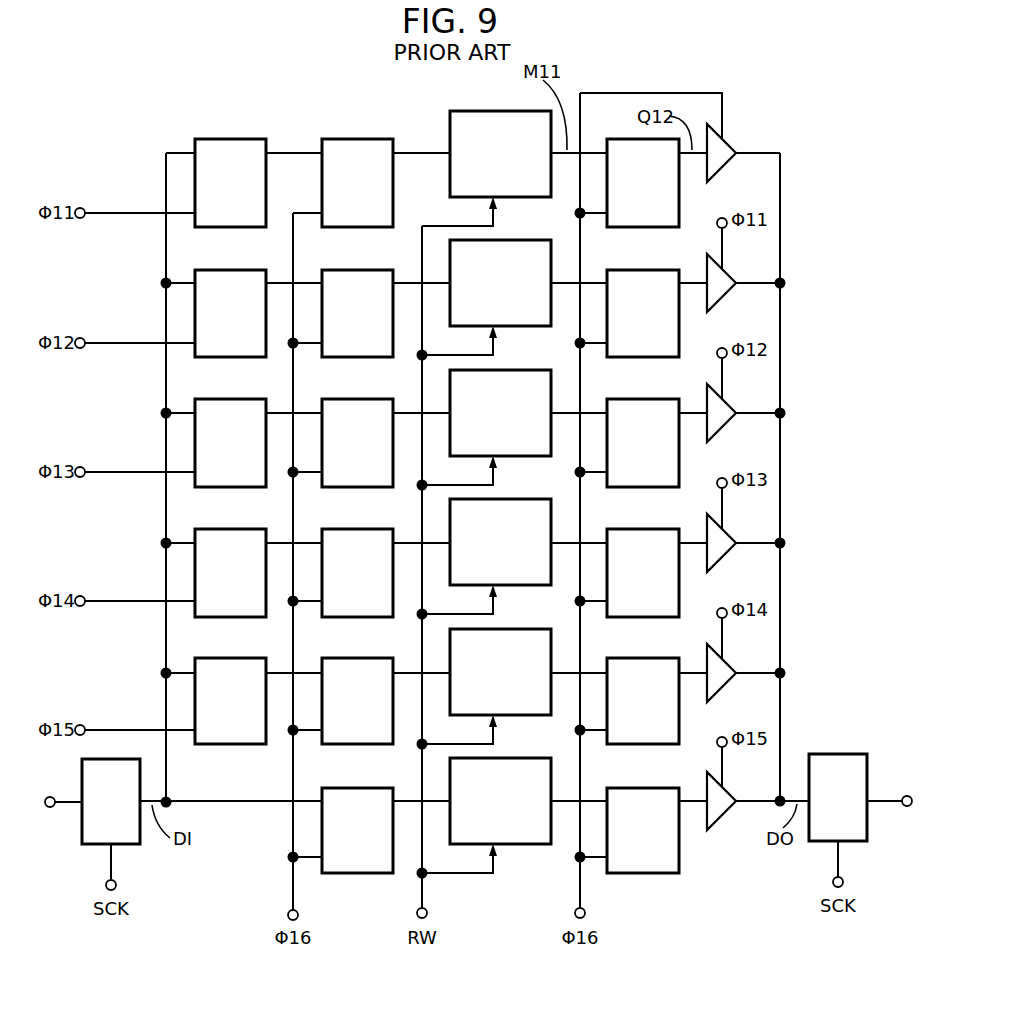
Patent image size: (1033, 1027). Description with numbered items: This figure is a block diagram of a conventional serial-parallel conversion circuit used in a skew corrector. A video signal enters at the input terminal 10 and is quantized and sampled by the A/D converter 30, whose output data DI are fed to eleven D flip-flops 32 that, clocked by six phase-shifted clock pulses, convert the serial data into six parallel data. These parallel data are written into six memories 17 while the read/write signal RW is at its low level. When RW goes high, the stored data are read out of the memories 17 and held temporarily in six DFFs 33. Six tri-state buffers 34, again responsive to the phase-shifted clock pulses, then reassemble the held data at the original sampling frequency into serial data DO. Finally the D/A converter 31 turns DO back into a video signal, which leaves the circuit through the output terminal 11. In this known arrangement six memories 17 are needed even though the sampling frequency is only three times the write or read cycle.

The input terminal 10 is at (57, 808).
The output terminal 11 is at (905, 807).
The memories 17 is at (523, 241).
The A/D converter 30 is at (82, 792).
The D/A converter 31 is at (831, 754).
The D flip-flops 32 is at (222, 270).
The DFFs 33 is at (650, 270).
The tri-state buffers 34 is at (727, 138).